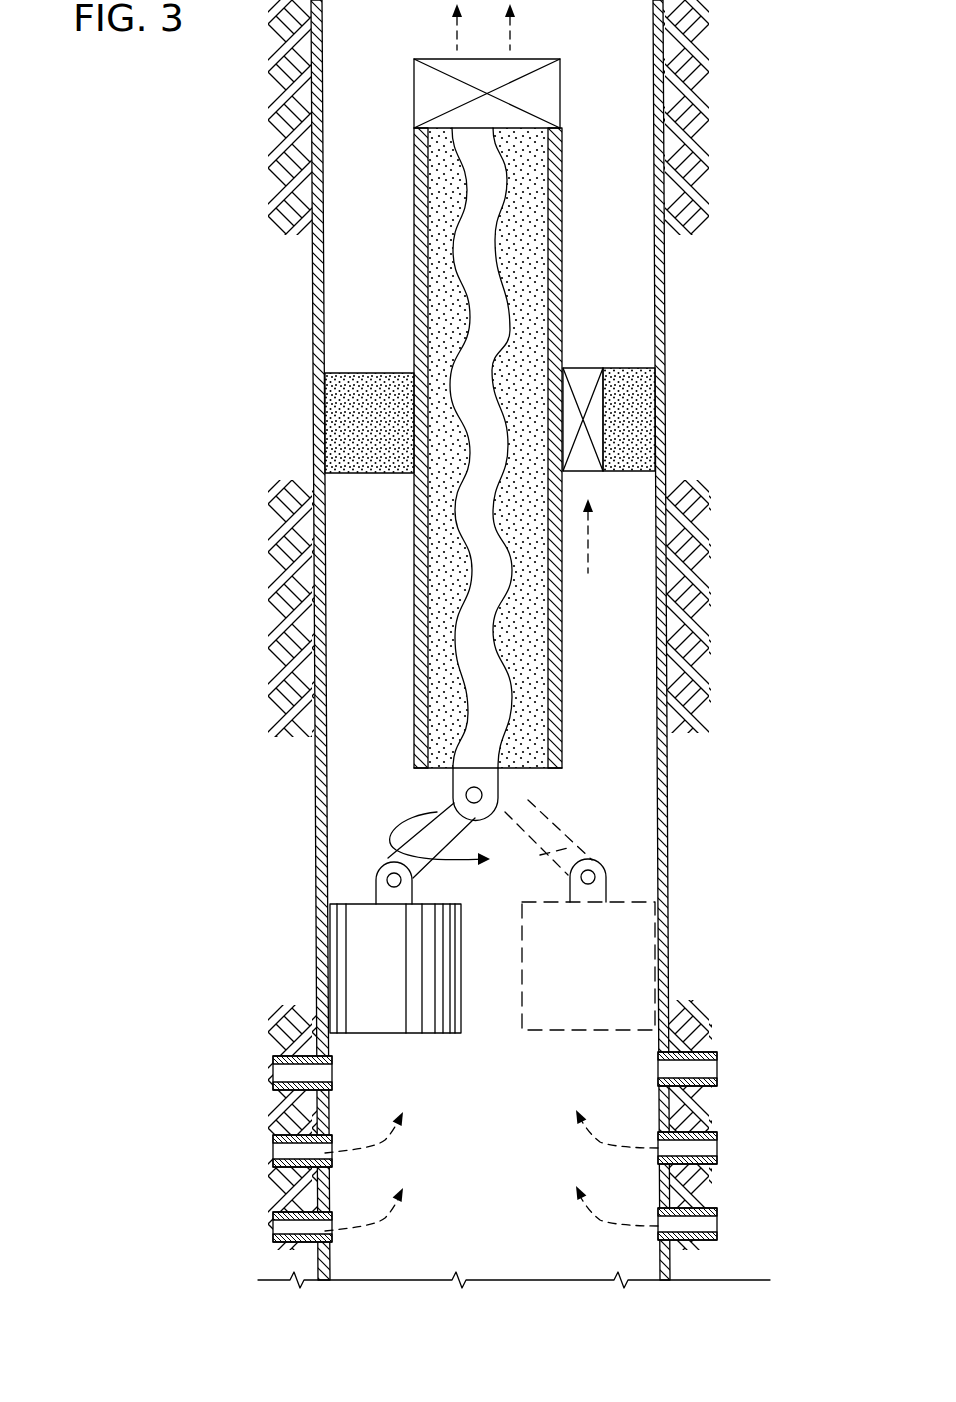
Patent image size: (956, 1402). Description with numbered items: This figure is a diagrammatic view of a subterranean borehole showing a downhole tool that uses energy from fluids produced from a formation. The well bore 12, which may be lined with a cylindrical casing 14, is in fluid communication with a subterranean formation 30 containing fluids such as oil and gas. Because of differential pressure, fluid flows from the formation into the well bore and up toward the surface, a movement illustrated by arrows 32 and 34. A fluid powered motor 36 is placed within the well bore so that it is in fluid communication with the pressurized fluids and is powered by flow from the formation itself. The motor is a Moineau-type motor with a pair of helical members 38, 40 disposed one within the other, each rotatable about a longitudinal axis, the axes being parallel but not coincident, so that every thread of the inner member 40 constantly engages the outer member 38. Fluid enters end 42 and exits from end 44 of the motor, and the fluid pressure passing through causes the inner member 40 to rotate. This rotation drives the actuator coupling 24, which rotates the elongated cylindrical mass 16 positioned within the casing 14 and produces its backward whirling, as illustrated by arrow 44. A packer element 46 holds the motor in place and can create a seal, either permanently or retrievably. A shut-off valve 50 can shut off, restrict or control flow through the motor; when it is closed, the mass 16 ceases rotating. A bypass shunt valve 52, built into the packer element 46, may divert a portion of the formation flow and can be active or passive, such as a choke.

The well bore 12 is at (658, 200).
The cylindrical casing 14 is at (662, 150).
The elongated cylindrical mass 16 is at (385, 1017).
The actuator coupling 24 is at (420, 833).
The subterranean formation 30 is at (680, 1047).
The arrows 32 is at (386, 1140).
The arrows 34 is at (513, 32).
The fluid powered motor 36 is at (537, 686).
The outer helical member 38 is at (536, 300).
The inner helical member 40 is at (487, 350).
The end 42 is at (535, 771).
The end 44 is at (560, 98).
The packer element 46 is at (632, 410).
The shut-off valve 50 is at (443, 57).
The bypass shunt valve 52 is at (586, 380).